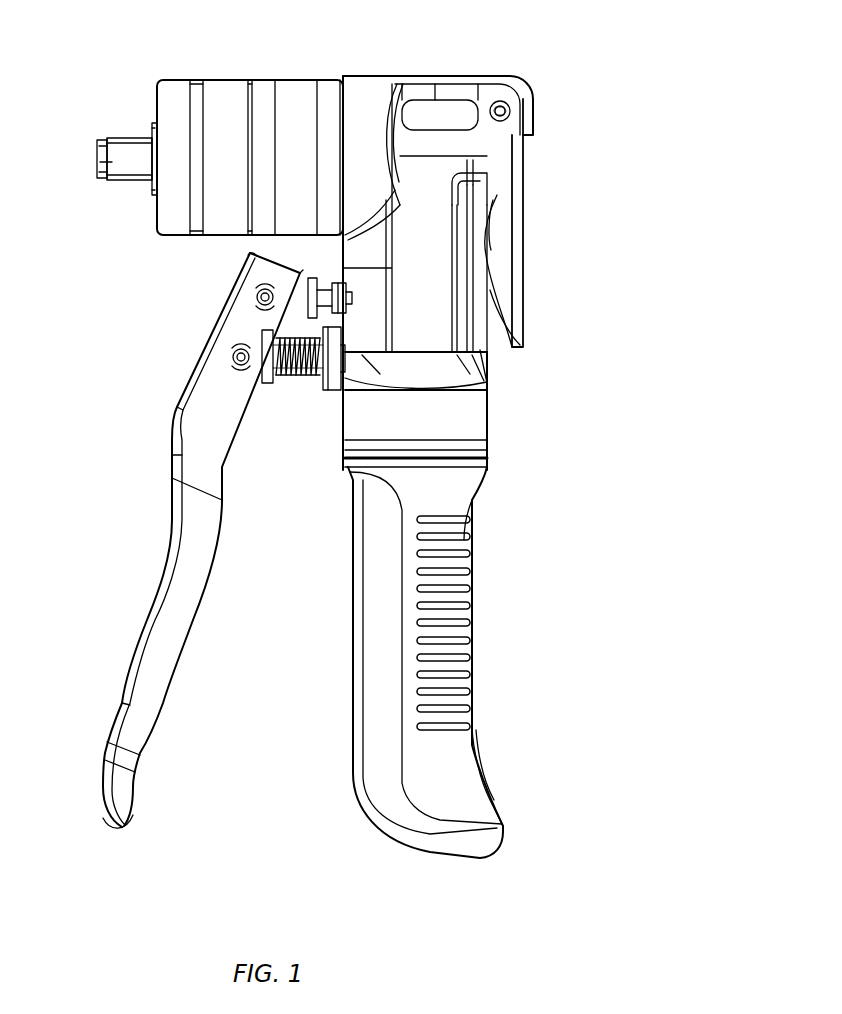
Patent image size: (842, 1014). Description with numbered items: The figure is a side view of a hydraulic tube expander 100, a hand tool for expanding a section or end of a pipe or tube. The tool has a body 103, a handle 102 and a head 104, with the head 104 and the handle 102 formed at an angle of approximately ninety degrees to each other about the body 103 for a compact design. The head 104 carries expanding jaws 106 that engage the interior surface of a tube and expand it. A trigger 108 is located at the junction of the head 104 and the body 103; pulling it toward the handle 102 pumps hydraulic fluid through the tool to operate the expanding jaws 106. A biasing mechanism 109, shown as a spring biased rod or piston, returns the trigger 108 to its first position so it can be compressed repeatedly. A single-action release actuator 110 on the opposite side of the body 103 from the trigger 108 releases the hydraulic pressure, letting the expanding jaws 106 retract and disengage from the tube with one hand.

The hydraulic tube expander 100 is at (703, 906).
The handle 102 is at (476, 493).
The body 103 is at (485, 378).
The head 104 is at (178, 80).
The expanding jaws 106 is at (105, 170).
The trigger 108 is at (186, 518).
The biasing mechanism 109 is at (300, 378).
The single-action release actuator 110 is at (512, 228).